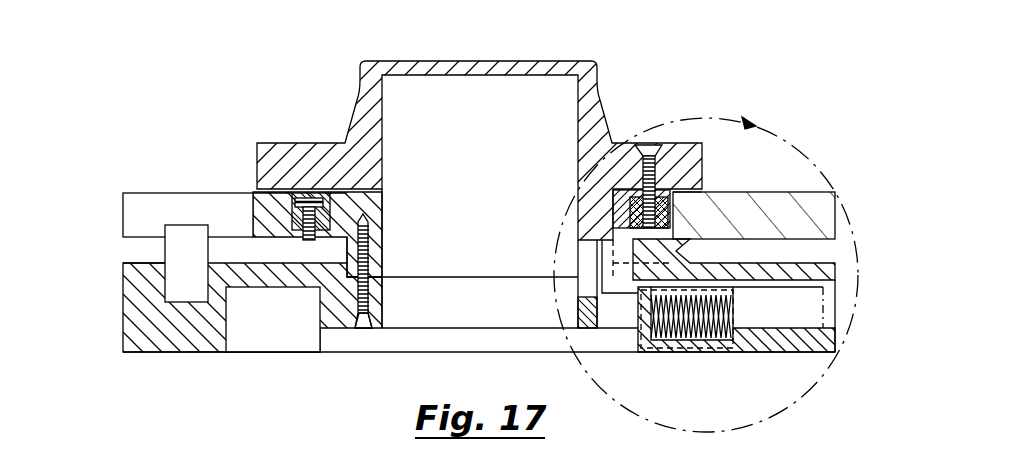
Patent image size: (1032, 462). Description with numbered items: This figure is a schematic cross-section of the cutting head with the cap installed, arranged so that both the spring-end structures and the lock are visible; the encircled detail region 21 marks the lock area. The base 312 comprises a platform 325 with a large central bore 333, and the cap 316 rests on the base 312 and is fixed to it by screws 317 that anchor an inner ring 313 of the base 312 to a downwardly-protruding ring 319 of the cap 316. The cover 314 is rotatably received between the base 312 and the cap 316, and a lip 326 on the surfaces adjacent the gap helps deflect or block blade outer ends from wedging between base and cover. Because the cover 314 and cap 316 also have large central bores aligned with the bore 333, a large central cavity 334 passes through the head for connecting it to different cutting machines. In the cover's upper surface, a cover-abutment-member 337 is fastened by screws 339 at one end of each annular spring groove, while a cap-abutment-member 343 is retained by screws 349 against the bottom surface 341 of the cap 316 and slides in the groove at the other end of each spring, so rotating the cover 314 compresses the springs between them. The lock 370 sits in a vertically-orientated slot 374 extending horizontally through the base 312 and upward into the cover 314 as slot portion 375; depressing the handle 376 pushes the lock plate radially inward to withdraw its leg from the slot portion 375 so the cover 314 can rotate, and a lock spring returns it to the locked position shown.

The detail region 21 is at (790, 139).
The base 312 is at (165, 356).
The inner ring 313 is at (376, 309).
The cover 314 is at (143, 202).
The cap 316 is at (336, 132).
The screws 317 is at (363, 332).
The downwardly-protruding ring 319 is at (374, 262).
The platform 325 is at (140, 287).
The lip 326 is at (287, 260).
The large central bore 333 is at (433, 338).
The large central cavity 334 is at (485, 150).
The cover-abutment-member 337 is at (293, 222).
The screws 339 is at (310, 205).
The bottom surface 341 is at (351, 205).
The cap-abutment-member 343 is at (640, 212).
The screws 349 is at (653, 143).
The lock 370 is at (703, 357).
The slot 374 is at (773, 335).
The slot portion 375 is at (612, 240).
The handle 376 is at (817, 308).